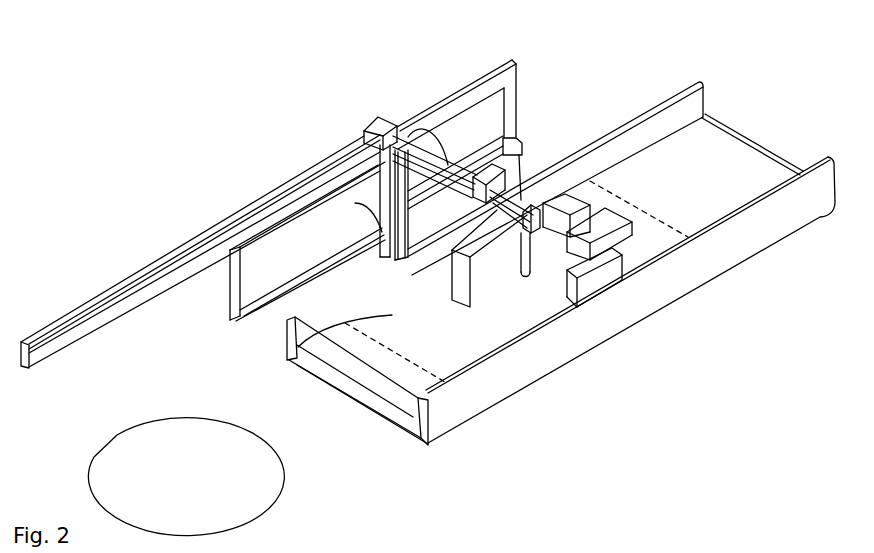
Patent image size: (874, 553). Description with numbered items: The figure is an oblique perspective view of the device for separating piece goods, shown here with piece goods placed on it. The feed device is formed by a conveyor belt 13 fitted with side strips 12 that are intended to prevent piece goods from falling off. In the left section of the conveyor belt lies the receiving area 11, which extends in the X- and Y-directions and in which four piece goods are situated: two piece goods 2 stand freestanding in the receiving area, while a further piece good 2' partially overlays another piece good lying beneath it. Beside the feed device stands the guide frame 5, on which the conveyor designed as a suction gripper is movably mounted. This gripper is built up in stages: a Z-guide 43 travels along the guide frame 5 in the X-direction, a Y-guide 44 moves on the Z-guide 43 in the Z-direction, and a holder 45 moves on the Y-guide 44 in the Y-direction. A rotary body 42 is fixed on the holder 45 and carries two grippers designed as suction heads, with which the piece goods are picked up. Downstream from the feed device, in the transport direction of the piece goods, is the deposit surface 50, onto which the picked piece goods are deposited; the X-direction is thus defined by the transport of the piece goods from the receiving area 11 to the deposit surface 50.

The piece good 2 is at (549, 359).
The piece good 2' is at (574, 130).
The guide frame 5 is at (495, 90).
The receiving area 11 is at (288, 361).
The side strips 12 is at (718, 248).
The conveyor belt 13 is at (718, 177).
The rotary body 42 is at (545, 195).
The Z-guide 43 is at (277, 190).
The Y-guide 44 is at (367, 147).
The holder 45 is at (522, 262).
The deposit surface 50 is at (185, 492).